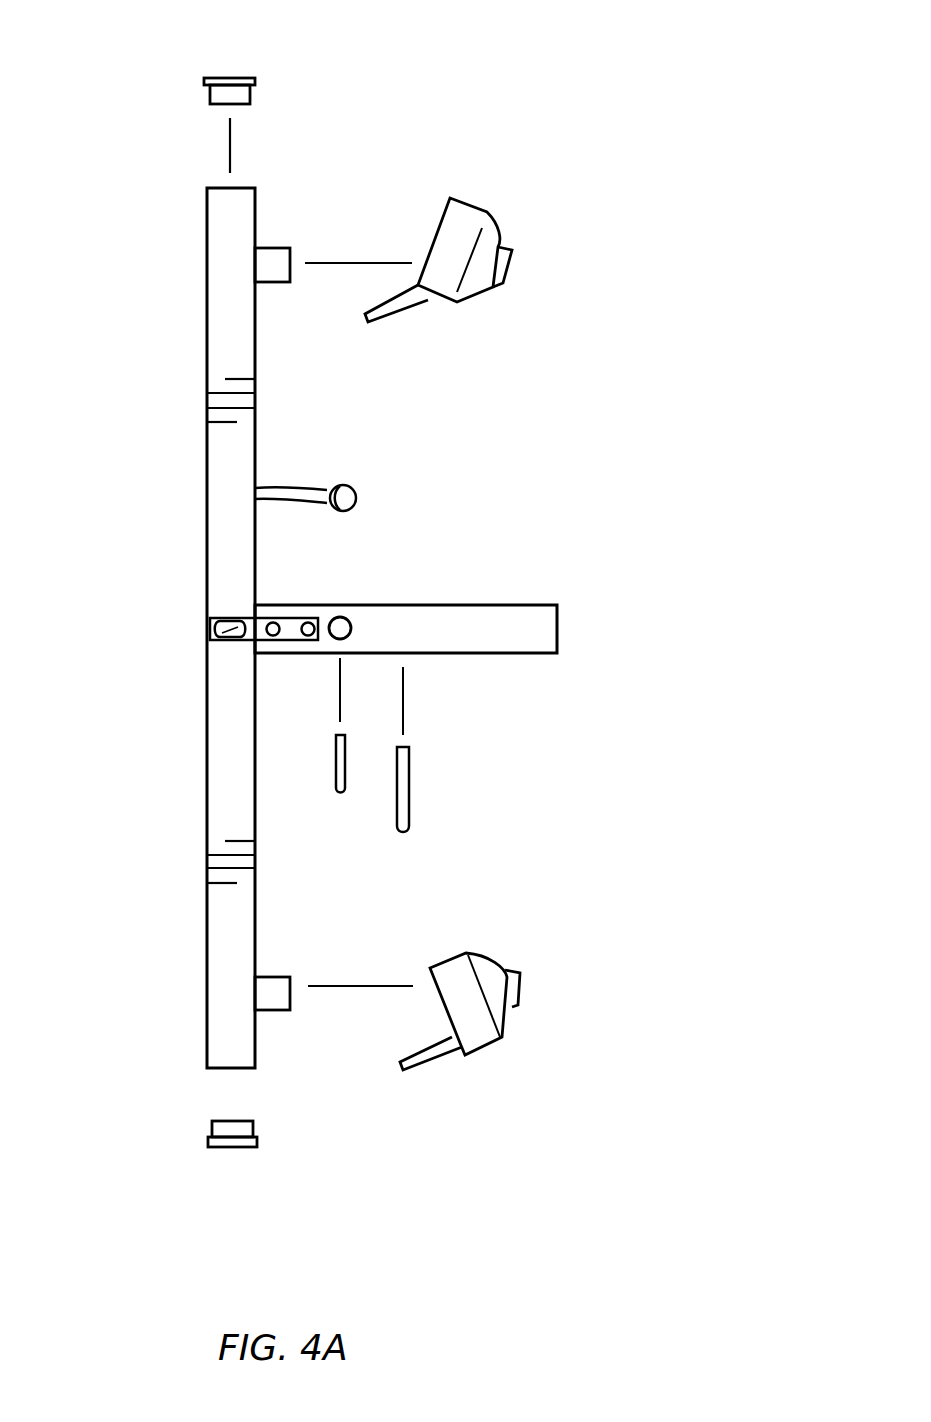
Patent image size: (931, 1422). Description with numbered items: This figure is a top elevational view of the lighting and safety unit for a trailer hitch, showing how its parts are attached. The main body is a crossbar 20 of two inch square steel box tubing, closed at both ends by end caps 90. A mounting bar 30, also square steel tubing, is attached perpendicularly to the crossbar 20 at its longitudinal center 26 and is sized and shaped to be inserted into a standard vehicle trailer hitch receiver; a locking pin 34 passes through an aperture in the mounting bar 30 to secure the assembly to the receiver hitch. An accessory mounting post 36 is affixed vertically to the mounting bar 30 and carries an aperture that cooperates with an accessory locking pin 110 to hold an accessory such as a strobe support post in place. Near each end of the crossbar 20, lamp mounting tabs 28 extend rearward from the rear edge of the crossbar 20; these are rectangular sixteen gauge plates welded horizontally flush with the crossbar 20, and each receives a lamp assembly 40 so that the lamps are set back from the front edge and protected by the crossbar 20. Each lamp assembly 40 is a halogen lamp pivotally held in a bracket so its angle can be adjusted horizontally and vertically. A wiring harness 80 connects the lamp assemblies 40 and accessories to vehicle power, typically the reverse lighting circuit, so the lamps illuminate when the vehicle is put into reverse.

The crossbar 20 is at (205, 308).
The longitudinal center 26 is at (203, 645).
The lamp mounting tabs 28 is at (280, 248).
The mounting bar 30 is at (518, 605).
The locking pin 34 is at (409, 830).
The accessory mounting post 36 is at (340, 617).
The lamp assembly 40 is at (472, 205).
The wiring harness 80 is at (307, 492).
The end caps 90 is at (222, 78).
The accessory locking pin 110 is at (335, 748).